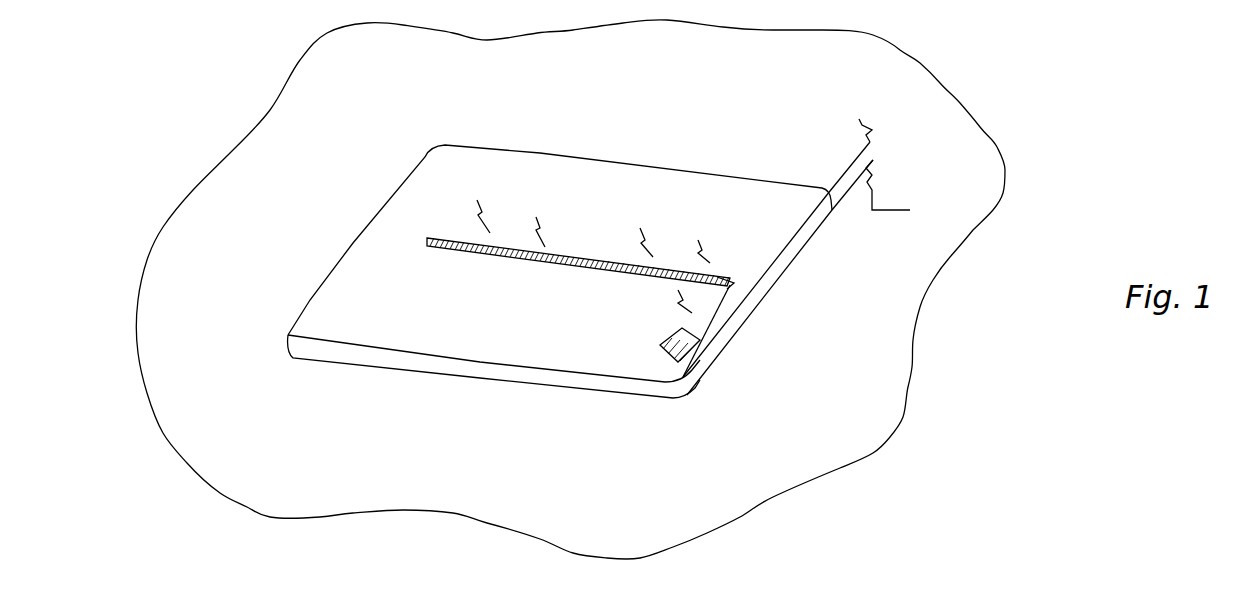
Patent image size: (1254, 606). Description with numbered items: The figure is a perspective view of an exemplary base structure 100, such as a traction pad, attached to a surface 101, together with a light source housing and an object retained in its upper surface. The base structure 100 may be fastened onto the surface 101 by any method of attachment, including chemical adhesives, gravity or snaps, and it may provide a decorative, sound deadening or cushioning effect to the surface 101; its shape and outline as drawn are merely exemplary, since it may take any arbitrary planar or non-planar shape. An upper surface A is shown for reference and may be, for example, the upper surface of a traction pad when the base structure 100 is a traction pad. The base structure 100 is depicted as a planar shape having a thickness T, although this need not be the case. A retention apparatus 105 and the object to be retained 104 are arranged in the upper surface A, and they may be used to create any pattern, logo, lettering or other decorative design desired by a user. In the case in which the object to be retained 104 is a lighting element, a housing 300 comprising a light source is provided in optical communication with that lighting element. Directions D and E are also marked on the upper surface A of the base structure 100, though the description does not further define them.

The base structure 100 is at (597, 343).
The surface 101 is at (853, 402).
The object to be retained 104 is at (596, 201).
The retention apparatus 105 is at (595, 263).
The housing 300 is at (687, 400).
The upper surface A is at (407, 242).
The thickness T is at (896, 173).
The direction D is at (500, 211).
The direction E is at (685, 235).